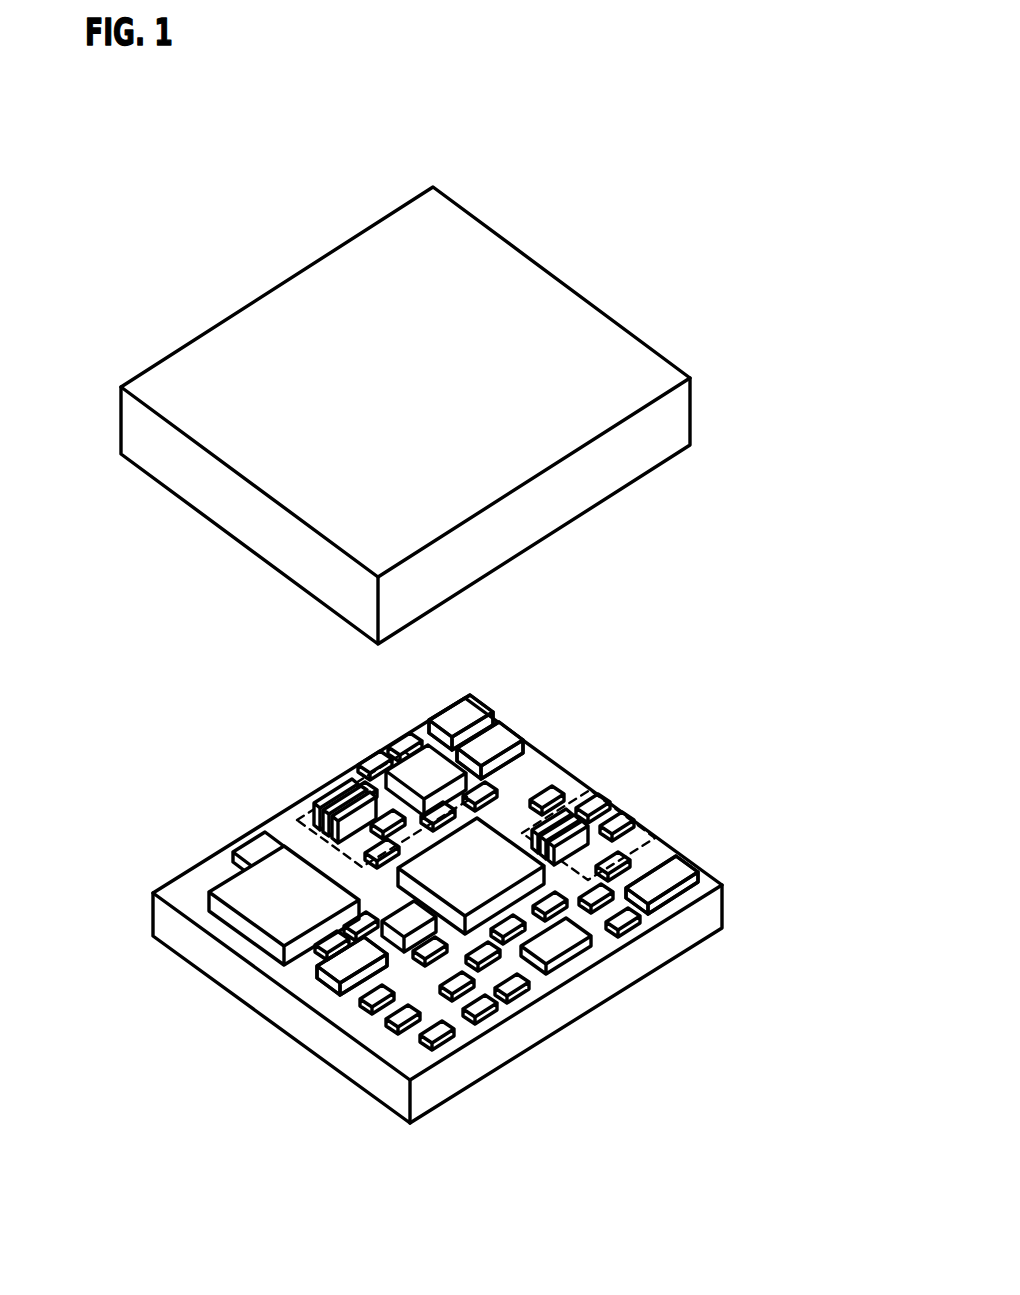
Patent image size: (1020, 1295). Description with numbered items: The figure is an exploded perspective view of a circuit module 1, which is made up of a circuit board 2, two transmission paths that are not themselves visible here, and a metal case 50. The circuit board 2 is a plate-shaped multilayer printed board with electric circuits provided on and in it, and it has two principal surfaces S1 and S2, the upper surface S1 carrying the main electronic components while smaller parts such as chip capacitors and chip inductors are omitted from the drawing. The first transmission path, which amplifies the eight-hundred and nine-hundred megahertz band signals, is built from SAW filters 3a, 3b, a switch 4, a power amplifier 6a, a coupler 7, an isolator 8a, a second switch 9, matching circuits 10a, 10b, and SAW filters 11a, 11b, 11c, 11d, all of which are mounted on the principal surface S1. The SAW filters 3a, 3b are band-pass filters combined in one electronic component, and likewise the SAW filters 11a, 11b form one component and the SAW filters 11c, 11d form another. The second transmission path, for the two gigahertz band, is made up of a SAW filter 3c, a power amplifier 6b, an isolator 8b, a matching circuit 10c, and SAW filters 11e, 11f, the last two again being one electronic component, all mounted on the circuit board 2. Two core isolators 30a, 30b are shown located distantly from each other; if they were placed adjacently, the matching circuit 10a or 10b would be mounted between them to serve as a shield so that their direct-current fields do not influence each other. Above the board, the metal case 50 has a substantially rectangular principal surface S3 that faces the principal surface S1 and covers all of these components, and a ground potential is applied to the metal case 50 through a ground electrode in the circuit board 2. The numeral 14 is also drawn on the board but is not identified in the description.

The circuit module 1 is at (85, 165).
The circuit board 2 is at (463, 883).
The SAW filter 3a is at (333, 978).
The SAW filter 3b is at (352, 966).
The SAW filter 3c is at (580, 945).
The switch 4 is at (425, 955).
The power amplifier 6a is at (262, 948).
The power amplifier 6b is at (475, 887).
The coupler 7 is at (252, 838).
The isolator 8a is at (300, 808).
The isolator 8b is at (636, 848).
The switch 9 is at (425, 768).
The matching circuit 10a is at (402, 745).
The matching circuit 10b is at (442, 812).
The matching circuit 10c is at (626, 921).
The SAW filter 11a is at (478, 705).
The SAW filter 11b is at (461, 722).
The SAW filter 11c is at (505, 740).
The SAW filter 11d is at (490, 750).
The SAW filter 11e is at (665, 882).
The SAW filter 11f is at (662, 885).
The side surface electrode 14 is at (708, 917).
The core isolator 30a is at (332, 800).
The core isolator 30b is at (605, 815).
The metal case 50 is at (451, 415).
The principal surface S1 is at (195, 882).
The principal surface S2 is at (523, 1057).
The principal surface S3 is at (510, 318).